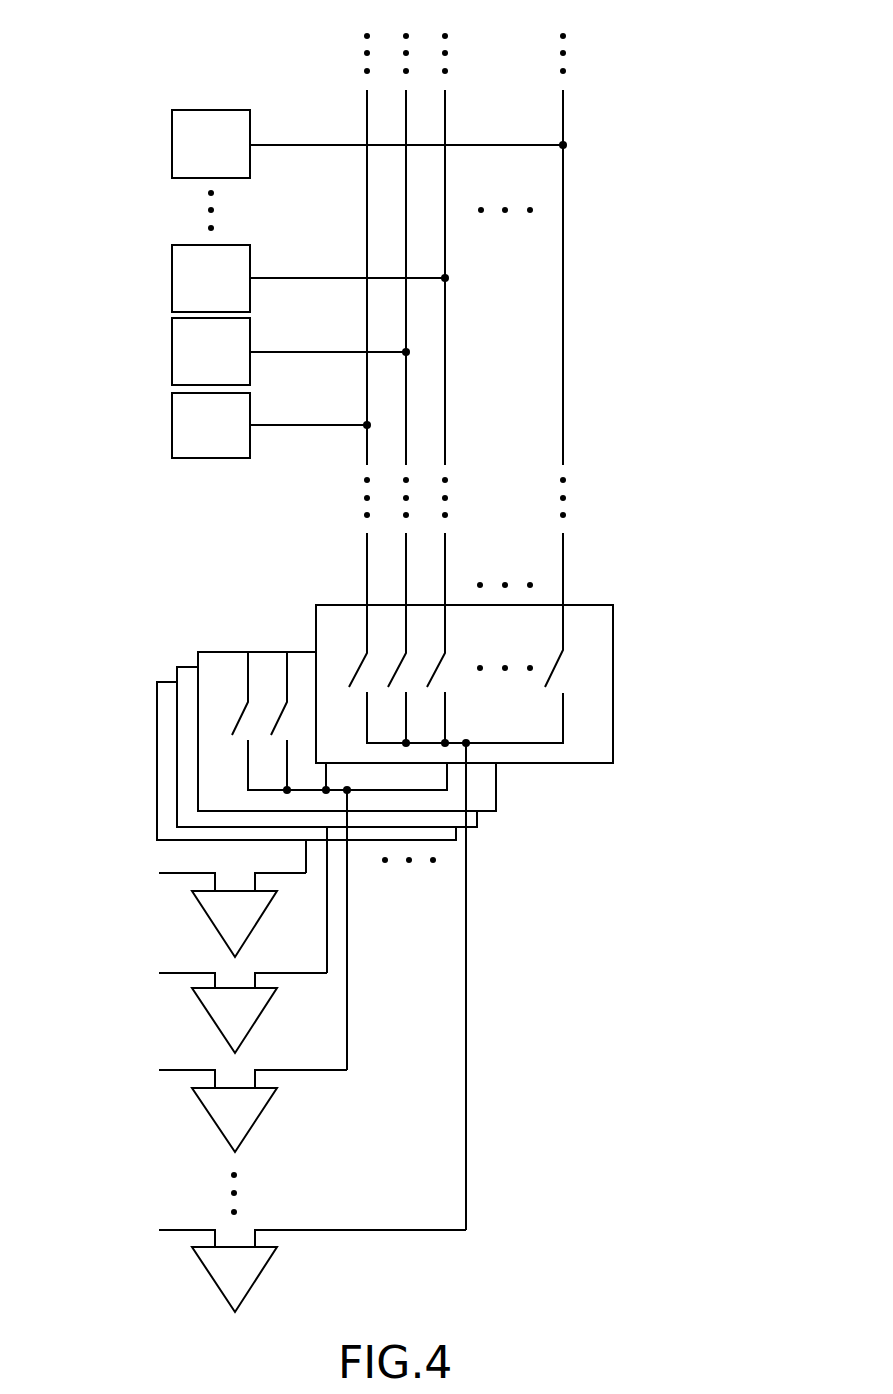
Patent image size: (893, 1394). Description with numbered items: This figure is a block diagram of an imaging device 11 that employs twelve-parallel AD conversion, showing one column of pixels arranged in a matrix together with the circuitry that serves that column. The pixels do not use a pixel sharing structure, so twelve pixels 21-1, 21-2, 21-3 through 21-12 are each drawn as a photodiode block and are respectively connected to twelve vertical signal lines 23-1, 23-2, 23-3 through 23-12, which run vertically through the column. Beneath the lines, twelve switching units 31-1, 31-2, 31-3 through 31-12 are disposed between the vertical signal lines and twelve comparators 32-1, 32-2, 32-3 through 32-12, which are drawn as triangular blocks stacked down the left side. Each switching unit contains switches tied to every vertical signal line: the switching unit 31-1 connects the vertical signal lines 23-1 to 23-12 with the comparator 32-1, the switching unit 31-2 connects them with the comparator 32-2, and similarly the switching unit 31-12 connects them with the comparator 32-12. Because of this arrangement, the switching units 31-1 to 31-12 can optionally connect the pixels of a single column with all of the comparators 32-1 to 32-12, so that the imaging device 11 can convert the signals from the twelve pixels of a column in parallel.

The imaging device 11 is at (673, 75).
The pixel 21-1 is at (172, 426).
The pixel 21-2 is at (172, 353).
The pixel 21-3 is at (172, 280).
The pixel 21-12 is at (172, 145).
The vertical signal line 23-1 is at (367, 580).
The vertical signal line 23-2 is at (406, 563).
The vertical signal line 23-3 is at (445, 572).
The vertical signal line 23-12 is at (563, 568).
The switching unit 31-1 is at (157, 759).
The switching unit 31-2 is at (192, 667).
The switching unit 31-3 is at (497, 783).
The switching unit 31-12 is at (613, 685).
The comparator 32-1 is at (212, 923).
The comparator 32-2 is at (212, 1019).
The comparator 32-3 is at (212, 1118).
The comparator 32-12 is at (212, 1278).